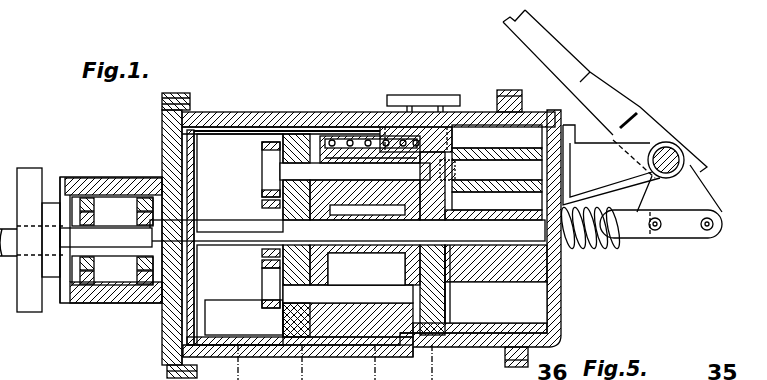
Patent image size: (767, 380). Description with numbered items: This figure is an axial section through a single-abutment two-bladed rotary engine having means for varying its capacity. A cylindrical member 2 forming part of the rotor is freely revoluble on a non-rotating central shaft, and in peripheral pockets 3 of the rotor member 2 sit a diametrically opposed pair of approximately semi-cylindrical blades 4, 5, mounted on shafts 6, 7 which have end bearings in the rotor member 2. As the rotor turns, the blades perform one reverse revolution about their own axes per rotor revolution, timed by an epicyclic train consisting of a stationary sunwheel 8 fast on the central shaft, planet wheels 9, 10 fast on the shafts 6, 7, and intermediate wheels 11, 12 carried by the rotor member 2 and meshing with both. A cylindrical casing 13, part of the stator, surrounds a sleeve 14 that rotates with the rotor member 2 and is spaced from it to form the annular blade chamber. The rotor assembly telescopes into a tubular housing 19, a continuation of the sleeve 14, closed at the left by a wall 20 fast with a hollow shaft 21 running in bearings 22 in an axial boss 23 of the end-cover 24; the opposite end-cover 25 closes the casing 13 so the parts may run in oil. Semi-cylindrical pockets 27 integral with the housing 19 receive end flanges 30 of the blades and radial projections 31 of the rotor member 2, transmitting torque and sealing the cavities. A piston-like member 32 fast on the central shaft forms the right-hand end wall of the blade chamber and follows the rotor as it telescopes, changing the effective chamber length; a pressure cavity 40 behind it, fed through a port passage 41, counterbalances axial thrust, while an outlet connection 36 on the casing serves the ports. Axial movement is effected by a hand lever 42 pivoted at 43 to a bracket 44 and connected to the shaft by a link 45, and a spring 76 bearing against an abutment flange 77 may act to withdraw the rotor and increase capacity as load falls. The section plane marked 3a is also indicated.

The cylindrical member 2 is at (233, 100).
The peripheral pockets 3 is at (294, 100).
The section line 3a is at (318, 62).
The blade 4 is at (366, 112).
The blade 5 is at (424, 112).
The shaft 6 is at (286, 165).
The shaft 7 is at (284, 296).
The sunwheel 8 is at (262, 253).
The planet wheel 9 is at (262, 158).
The planet wheel 10 is at (268, 283).
The intermediate wheel 11 is at (262, 206).
The intermediate wheel 12 is at (262, 265).
The cylindrical casing 13 is at (400, 345).
The sleeve 14 is at (374, 118).
The tubular housing 19 is at (255, 122).
The wall 20 is at (186, 160).
The hollow shaft 21 is at (92, 268).
The bearings 22 is at (92, 210).
The axial boss 23 is at (116, 178).
The end-cover 24 is at (168, 135).
The end-cover 25 is at (560, 308).
The pockets 27 is at (226, 160).
The flanges 30 is at (320, 126).
The radial projections 31 is at (298, 124).
The piston-like member 32 is at (452, 348).
The outlet connection 36 is at (440, 96).
The pressure cavity 40 is at (452, 204).
The port passage 41 is at (458, 171).
The hand lever 42 is at (562, 52).
The pivot 43 is at (680, 150).
The bracket 44 is at (595, 160).
The link 45 is at (678, 234).
The spring 76 is at (583, 250).
The abutment flange 77 is at (617, 250).